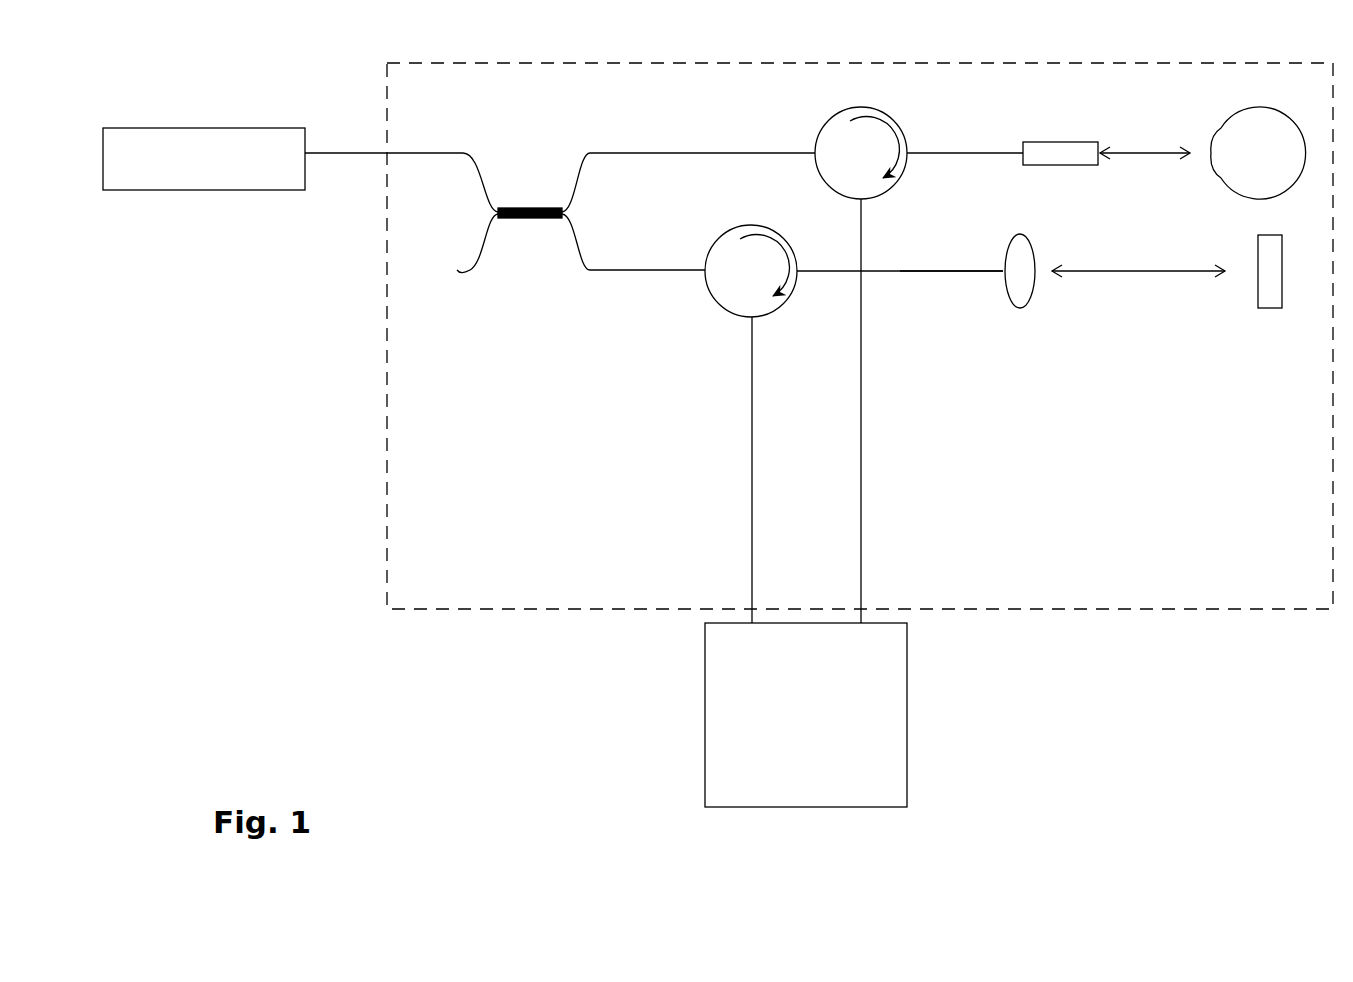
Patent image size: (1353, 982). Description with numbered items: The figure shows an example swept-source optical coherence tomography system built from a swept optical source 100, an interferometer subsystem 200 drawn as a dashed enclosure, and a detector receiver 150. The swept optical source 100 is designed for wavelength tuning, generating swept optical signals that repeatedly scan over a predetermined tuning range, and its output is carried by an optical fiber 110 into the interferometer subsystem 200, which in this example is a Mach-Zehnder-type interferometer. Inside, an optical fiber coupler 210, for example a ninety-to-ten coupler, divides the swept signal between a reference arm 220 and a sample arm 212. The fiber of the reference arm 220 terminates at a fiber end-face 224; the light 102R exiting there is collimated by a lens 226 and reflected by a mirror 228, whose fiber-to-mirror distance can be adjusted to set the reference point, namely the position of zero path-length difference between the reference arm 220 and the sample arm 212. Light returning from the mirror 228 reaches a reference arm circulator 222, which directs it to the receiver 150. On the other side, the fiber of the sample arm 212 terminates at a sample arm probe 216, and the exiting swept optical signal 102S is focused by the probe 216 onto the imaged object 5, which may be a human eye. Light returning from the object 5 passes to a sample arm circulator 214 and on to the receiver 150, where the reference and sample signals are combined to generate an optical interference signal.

The swept optical source 100 is at (204, 159).
The optical fiber 110 is at (346, 146).
The interferometer subsystem 200 is at (860, 336).
The optical fiber coupler 210 is at (530, 203).
The sample arm 212 is at (708, 148).
The sample arm circulator 214 is at (818, 128).
The sample arm probe 216 is at (1022, 148).
The exiting swept optical signal 102S is at (1160, 150).
The imaged object 5 is at (1258, 153).
The reference arm 220 is at (585, 270).
The reference arm circulator 222 is at (707, 295).
The fiber end-face 224 is at (985, 266).
The lens 226 is at (1003, 293).
The light exiting the reference arm 102R is at (1139, 276).
The mirror 228 is at (1270, 310).
The receiver 150 is at (806, 715).